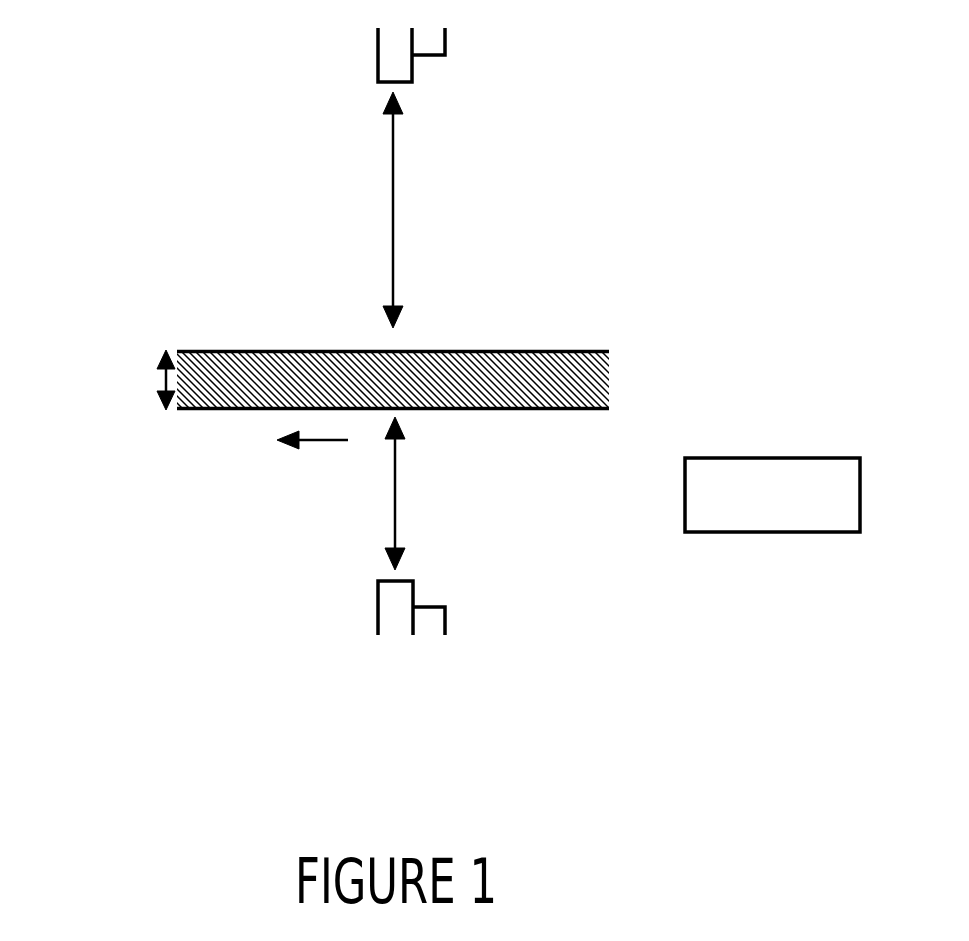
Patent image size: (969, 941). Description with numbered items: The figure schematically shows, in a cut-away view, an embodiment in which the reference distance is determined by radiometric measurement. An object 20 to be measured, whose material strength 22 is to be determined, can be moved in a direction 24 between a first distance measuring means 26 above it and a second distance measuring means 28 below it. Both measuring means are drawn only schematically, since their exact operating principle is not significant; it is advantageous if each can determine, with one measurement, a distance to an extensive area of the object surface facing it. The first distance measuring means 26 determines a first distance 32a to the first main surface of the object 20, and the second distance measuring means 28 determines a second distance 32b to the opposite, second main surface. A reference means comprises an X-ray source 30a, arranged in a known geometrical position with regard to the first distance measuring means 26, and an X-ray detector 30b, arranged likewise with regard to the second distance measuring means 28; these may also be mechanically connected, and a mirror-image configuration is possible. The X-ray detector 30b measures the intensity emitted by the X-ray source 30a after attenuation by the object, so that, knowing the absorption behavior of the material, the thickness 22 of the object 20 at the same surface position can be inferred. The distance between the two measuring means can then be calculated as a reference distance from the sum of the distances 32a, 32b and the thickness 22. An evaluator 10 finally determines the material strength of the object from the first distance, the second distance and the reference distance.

The evaluator 10 is at (773, 532).
The object to be measured 20 is at (609, 350).
The material strength 22 is at (162, 380).
The direction 24 is at (322, 459).
The first distance measuring means 26 is at (378, 55).
The second distance measuring means 28 is at (378, 612).
The X-ray source 30a is at (445, 32).
The X-ray detector 30b is at (445, 612).
The first distance 32a is at (393, 208).
The second distance 32b is at (395, 493).